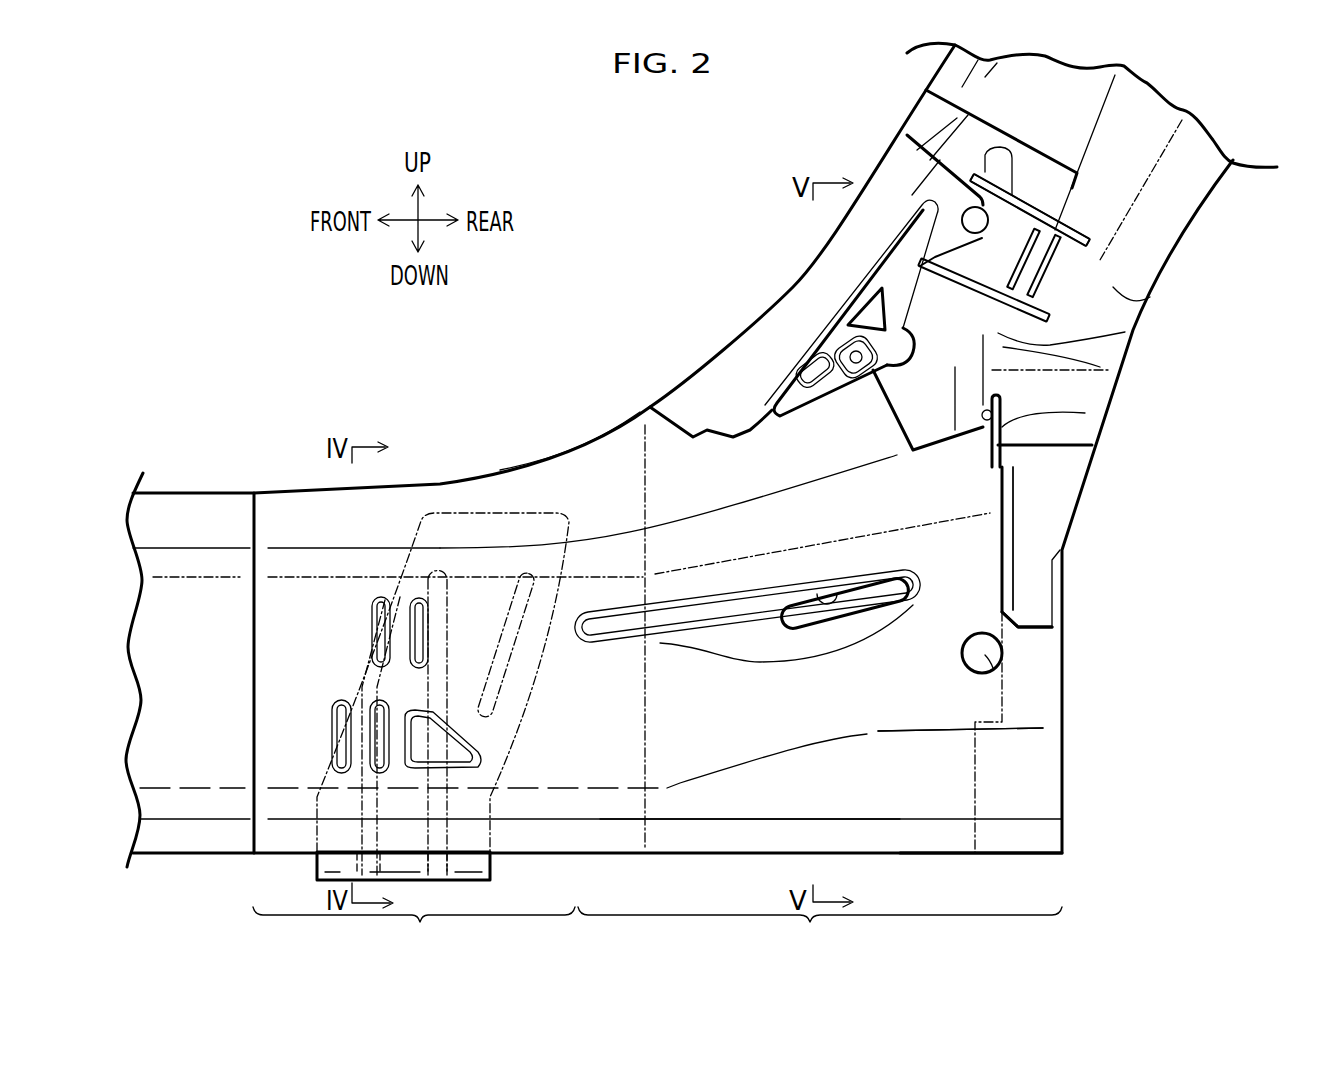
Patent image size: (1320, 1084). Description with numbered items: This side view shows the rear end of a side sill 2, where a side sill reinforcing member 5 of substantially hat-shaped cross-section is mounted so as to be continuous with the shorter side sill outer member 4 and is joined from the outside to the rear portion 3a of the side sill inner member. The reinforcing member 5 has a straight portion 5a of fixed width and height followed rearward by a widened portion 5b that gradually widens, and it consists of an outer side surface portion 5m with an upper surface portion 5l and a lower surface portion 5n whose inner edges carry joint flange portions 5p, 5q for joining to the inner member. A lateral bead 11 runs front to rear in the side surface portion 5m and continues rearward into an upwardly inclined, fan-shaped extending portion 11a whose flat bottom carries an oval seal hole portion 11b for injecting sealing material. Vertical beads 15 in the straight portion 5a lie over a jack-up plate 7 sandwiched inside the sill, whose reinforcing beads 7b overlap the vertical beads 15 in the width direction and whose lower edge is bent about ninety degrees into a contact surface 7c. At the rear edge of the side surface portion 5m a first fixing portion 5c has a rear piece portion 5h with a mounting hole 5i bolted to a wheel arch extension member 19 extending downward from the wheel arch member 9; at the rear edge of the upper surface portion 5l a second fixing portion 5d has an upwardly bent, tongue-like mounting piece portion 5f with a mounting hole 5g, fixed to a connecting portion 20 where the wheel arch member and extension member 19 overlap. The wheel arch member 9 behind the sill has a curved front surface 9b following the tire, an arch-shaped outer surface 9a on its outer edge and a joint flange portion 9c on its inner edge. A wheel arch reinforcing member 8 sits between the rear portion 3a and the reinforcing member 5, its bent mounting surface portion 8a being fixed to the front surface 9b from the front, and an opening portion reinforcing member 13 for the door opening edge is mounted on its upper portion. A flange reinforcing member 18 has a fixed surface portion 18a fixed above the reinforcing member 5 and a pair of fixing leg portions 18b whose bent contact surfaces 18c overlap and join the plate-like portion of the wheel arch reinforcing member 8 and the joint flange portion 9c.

The side sill 2 is at (267, 424).
The rear portion 3a is at (495, 500).
The side sill outer member 4 is at (215, 632).
The side sill reinforcing member 5 is at (700, 415).
The straight portion 5a is at (414, 935).
The widened portion 5b is at (820, 935).
The first fixing portion 5c is at (953, 630).
The second fixing portion 5d is at (974, 413).
The mounting piece portion 5f is at (1002, 433).
The mounting hole 5g is at (1085, 413).
The rear piece portion 5h is at (1032, 652).
The mounting hole 5i is at (1000, 660).
The upper surface portion 5l is at (777, 520).
The side surface portion 5m is at (885, 690).
The lower surface portion 5n is at (947, 853).
The joint flange portion 5p is at (540, 490).
The joint flange portion 5q is at (722, 835).
The jack-up plate 7 is at (457, 505).
The reinforcing bead 7b is at (375, 678).
The contact surface 7c is at (462, 880).
The wheel arch reinforcing member 8 is at (930, 118).
The mounting surface portion 8a is at (1125, 332).
The wheel arch member 9 is at (1120, 160).
The outer surface 9a is at (1150, 297).
The front surface 9b is at (1005, 350).
The joint flange portion 9c is at (953, 67).
The lateral bead 11 is at (674, 593).
The extending portion 11a is at (880, 582).
The seal hole portion 11b is at (820, 594).
The opening portion reinforcing member 13 is at (817, 307).
The vertical beads 15 is at (407, 643).
The flange reinforcing member 18 is at (1080, 215).
The fixed surface portion 18a is at (990, 270).
The fixing leg portions 18b is at (1057, 210).
The contact surface 18c is at (992, 145).
The wheel arch extension member 19 is at (1040, 500).
The connecting portion 20 is at (1014, 391).